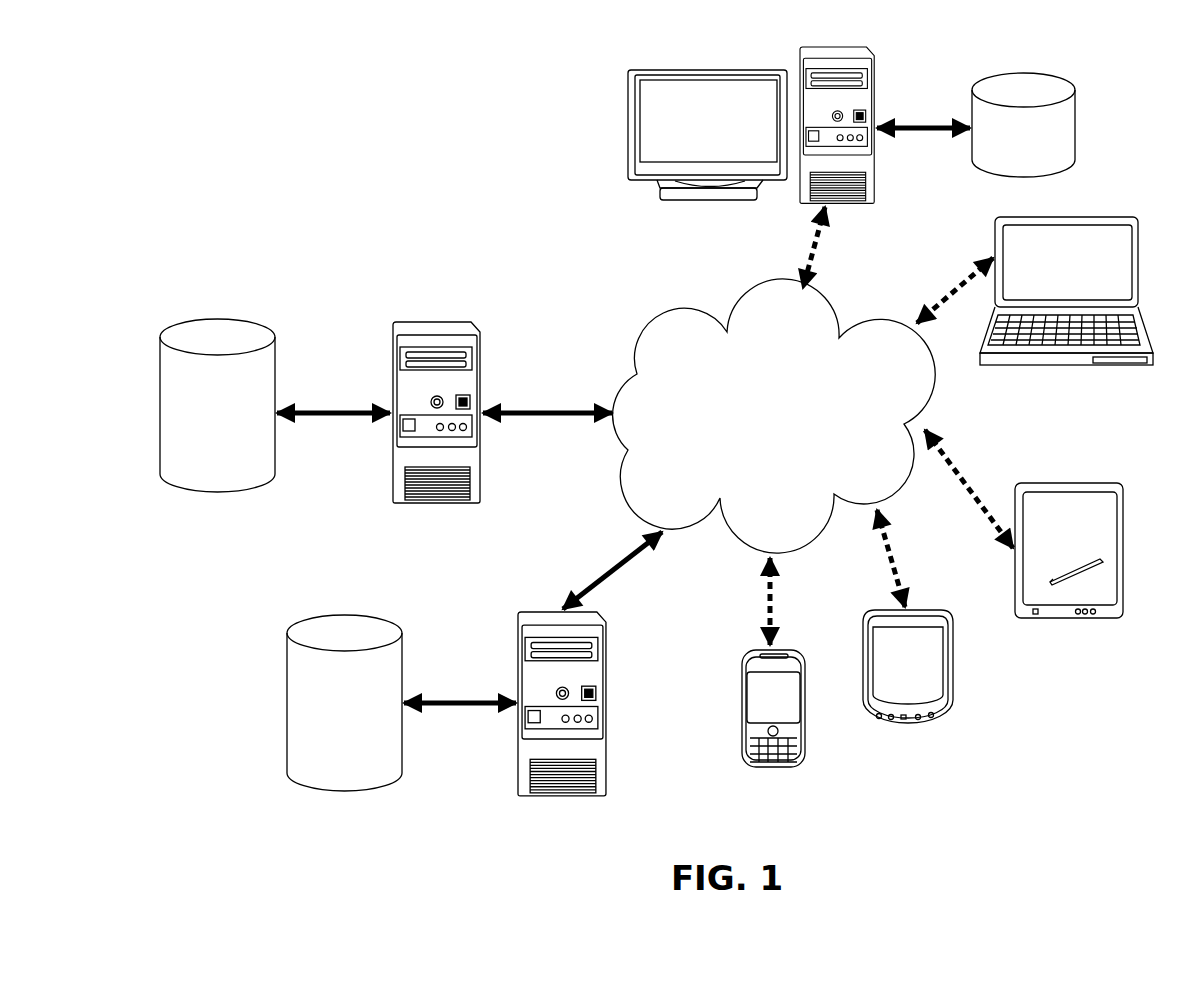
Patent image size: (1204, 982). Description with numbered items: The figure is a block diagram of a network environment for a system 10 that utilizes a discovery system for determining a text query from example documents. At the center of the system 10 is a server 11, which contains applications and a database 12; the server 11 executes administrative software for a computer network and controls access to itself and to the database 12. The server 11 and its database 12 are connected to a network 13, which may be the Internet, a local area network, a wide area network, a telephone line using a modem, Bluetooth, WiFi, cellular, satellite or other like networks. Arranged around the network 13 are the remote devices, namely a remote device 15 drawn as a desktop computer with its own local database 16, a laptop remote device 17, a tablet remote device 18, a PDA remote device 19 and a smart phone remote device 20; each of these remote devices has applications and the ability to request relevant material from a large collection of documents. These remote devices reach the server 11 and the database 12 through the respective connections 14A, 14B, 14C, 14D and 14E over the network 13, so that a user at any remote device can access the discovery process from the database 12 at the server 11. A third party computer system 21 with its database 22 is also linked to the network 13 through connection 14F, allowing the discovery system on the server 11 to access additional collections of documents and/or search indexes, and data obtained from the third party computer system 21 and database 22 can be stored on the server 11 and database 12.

The system 10 is at (385, 127).
The server 11 is at (435, 321).
The database 12 is at (227, 317).
The network 13 is at (668, 303).
The connection 14A is at (810, 247).
The connection 14B is at (953, 293).
The connection 14C is at (972, 482).
The connection 14D is at (892, 558).
The connection 14E is at (768, 600).
The connection 14F is at (608, 568).
The remote device 15 is at (830, 47).
The local database 16 is at (1077, 130).
The remote device 17 is at (1140, 264).
The remote device 18 is at (1103, 483).
The remote device 19 is at (952, 690).
The remote device 20 is at (742, 717).
The third party computer system 21 is at (608, 689).
The database 22 is at (343, 614).